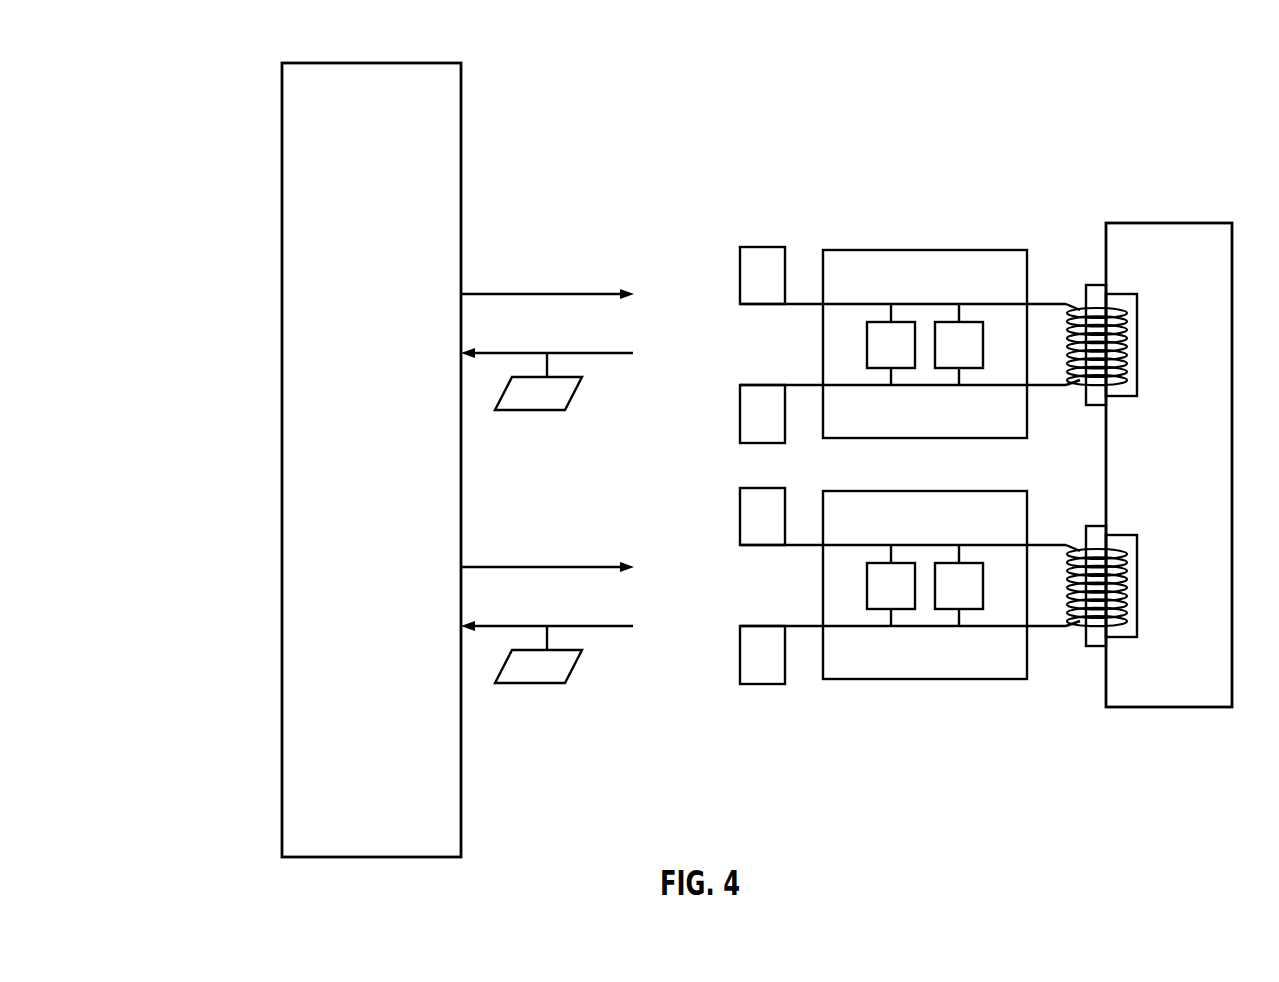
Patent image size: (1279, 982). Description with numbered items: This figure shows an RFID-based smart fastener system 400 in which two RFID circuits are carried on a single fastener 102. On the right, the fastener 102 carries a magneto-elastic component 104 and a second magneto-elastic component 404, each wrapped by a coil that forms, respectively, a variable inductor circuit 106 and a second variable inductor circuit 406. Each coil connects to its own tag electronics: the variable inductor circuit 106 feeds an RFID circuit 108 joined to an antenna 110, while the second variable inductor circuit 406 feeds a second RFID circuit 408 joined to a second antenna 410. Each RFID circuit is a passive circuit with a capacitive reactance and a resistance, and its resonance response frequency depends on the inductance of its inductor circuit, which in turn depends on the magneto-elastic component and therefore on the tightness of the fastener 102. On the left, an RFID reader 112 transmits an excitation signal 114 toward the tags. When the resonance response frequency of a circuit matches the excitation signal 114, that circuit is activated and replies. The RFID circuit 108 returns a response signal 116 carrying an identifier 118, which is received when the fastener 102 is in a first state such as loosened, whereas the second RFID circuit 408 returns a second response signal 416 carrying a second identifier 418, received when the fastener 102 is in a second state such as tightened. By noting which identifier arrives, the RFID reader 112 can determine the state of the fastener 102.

The RFID-based smart fastener system 400 is at (250, 59).
The RFID reader 112 is at (282, 191).
The excitation signal 114 is at (547, 293).
The response signal 116 is at (568, 352).
The identifier 118 is at (530, 411).
The second response signal 416 is at (568, 625).
The second identifier 418 is at (530, 684).
The antenna 110 is at (740, 278).
The RFID circuit 108 is at (925, 249).
The variable inductor circuit 106 is at (1082, 384).
The magneto-elastic component 104 is at (1097, 285).
The fastener 102 is at (1167, 223).
The second antenna 410 is at (740, 519).
The second RFID circuit 408 is at (925, 491).
The second variable inductor circuit 406 is at (1082, 625).
The second magneto-elastic component 404 is at (1097, 526).